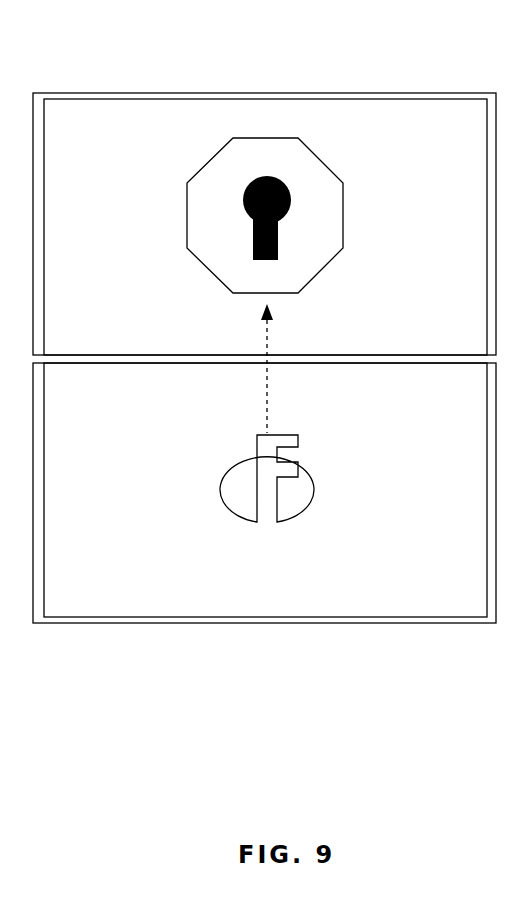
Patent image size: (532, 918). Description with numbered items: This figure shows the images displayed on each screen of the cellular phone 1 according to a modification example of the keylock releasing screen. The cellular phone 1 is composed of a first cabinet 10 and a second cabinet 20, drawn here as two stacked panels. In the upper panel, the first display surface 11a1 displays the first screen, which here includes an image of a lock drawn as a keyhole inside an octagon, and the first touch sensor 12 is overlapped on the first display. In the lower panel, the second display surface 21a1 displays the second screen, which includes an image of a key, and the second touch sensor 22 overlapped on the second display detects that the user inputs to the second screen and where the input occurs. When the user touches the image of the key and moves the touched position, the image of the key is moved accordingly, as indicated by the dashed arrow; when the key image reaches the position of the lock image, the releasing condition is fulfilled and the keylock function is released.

The cellular phone 1 is at (248, 65).
The first cabinet 10 is at (134, 90).
The first display surface 11a1 is at (299, 110).
The first touch sensor 12 is at (423, 96).
The second cabinet 20 is at (88, 624).
The second display surface 21a1 is at (189, 590).
The second touch sensor 22 is at (366, 615).